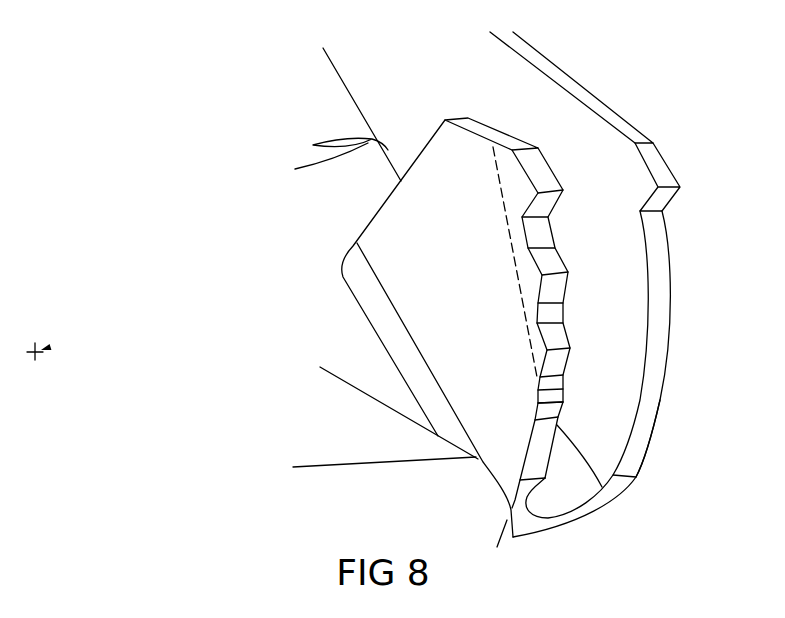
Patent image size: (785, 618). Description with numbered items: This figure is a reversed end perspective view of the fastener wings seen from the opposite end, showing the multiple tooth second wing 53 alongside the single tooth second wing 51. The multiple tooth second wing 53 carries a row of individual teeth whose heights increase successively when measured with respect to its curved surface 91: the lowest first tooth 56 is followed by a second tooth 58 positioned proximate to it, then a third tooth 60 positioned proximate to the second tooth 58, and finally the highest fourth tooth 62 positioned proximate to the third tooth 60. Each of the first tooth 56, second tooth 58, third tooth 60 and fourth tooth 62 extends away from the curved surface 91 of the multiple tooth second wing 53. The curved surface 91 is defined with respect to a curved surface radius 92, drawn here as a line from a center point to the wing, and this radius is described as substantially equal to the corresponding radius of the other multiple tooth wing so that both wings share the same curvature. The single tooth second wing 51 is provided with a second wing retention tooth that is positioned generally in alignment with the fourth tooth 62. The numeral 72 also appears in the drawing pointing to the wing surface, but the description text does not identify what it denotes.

The single tooth second wing 51 is at (626, 237).
The multiple tooth second wing 53 is at (443, 150).
The first tooth 56 is at (563, 400).
The second tooth 58 is at (570, 348).
The third tooth 60 is at (568, 272).
The fourth tooth 62 is at (563, 190).
The rim surface 72 is at (660, 379).
The curved surface 91 is at (551, 460).
The curved surface radius 92 is at (37, 351).